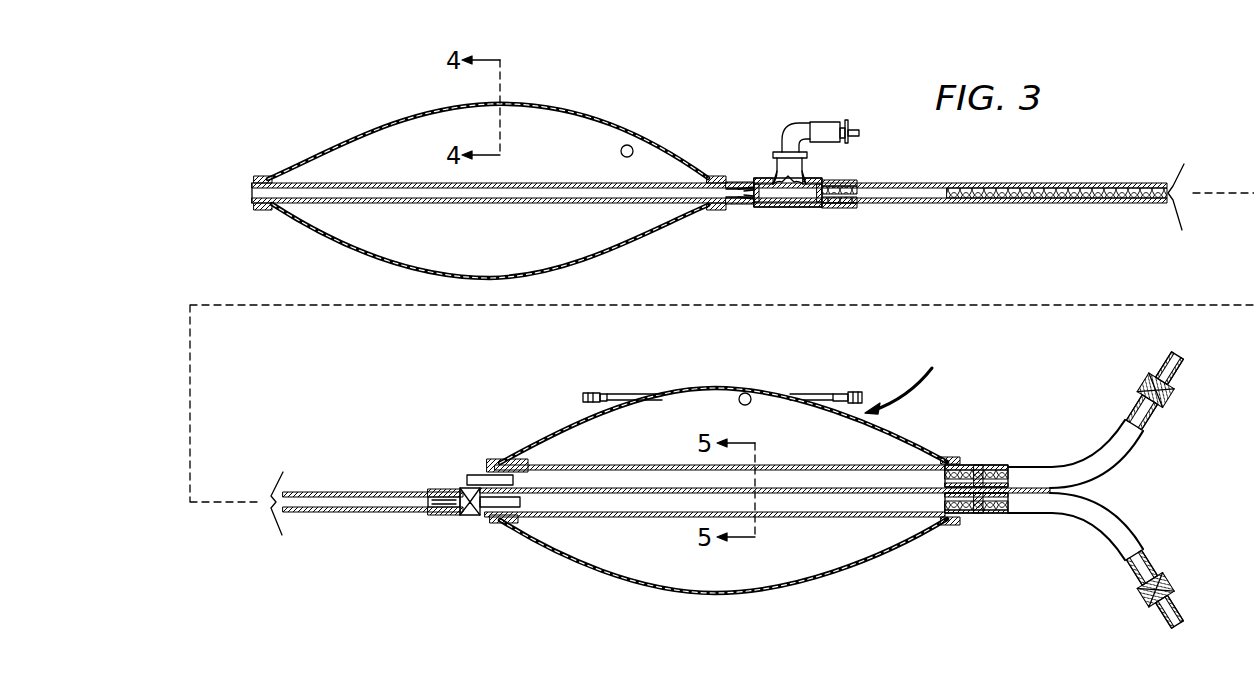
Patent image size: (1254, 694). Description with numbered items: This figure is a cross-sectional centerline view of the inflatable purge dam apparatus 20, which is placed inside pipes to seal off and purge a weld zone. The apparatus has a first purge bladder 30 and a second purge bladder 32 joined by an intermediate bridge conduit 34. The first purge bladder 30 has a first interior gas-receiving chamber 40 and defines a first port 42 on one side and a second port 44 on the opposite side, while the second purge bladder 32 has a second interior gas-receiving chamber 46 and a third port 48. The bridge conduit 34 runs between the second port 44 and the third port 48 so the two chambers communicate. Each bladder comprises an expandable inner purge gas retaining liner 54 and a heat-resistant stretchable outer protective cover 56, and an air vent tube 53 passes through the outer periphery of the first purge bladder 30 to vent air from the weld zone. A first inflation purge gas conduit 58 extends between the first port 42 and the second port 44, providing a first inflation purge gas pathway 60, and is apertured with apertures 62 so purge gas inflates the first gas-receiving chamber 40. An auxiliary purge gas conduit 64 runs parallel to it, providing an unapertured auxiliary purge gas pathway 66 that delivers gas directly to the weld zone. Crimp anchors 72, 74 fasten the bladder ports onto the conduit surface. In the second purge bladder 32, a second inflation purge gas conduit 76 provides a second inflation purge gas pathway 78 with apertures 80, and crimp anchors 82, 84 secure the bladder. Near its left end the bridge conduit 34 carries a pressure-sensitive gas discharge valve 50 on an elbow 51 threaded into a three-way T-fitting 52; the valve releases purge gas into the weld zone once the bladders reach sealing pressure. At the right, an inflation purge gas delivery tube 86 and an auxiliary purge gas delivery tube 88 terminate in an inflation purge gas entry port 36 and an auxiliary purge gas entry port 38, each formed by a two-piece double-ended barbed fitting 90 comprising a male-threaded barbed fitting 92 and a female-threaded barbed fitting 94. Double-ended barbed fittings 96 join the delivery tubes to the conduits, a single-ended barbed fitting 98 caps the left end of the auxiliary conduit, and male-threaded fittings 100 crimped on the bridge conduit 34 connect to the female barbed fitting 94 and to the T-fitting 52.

The inflatable purge dam apparatus 20 is at (904, 377).
The first purge bladder 30 is at (795, 598).
The second purge bladder 32 is at (620, 255).
The bridge conduit 34 is at (298, 500).
The inflation purge gas entry port 36 is at (1178, 625).
The auxiliary purge gas entry port 38 is at (1178, 352).
The first interior gas-receiving chamber 40 is at (723, 503).
The first port 42 is at (962, 513).
The second port 44 is at (470, 515).
The second interior gas-receiving chamber 46 is at (488, 184).
The third port 48 is at (731, 207).
The pressure-sensitive gas discharge valve 50 is at (843, 122).
The elbow 51 is at (786, 137).
The three-way T-fitting 52 is at (795, 195).
The air vent tube 53 is at (600, 392).
The purge gas retaining liner 54 is at (633, 147).
The protective cover 56 is at (600, 124).
The first inflation purge gas conduit 58 is at (800, 560).
The first inflation purge gas pathway 60 is at (862, 510).
The apertures 62 is at (768, 517).
The auxiliary purge gas conduit 64 is at (650, 465).
The auxiliary purge gas pathway 66 is at (865, 478).
The crimp anchor 72 is at (952, 457).
The crimp anchor 74 is at (497, 459).
The second inflation purge gas conduit 76 is at (380, 182).
The second inflation purge gas pathway 78 is at (580, 190).
The apertures 80 is at (486, 203).
The crimp anchor 82 is at (716, 177).
The crimp anchor 84 is at (262, 177).
The inflation purge gas delivery tube 86 is at (1075, 520).
The auxiliary purge gas delivery tube 88 is at (1100, 453).
The two-piece double-ended barbed fitting 90 is at (1158, 332).
The male-threaded single-ended barbed fitting 92 is at (750, 200).
The female-threaded single-ended barbed fitting 94 is at (504, 523).
The double-ended barbed fittings 96 is at (978, 466).
The single-ended barbed fitting 98 is at (470, 474).
The male-threaded fitting 100 is at (835, 206).